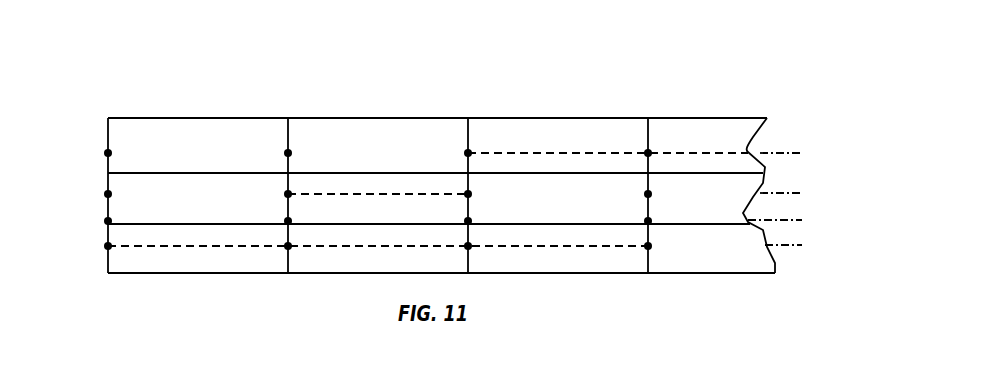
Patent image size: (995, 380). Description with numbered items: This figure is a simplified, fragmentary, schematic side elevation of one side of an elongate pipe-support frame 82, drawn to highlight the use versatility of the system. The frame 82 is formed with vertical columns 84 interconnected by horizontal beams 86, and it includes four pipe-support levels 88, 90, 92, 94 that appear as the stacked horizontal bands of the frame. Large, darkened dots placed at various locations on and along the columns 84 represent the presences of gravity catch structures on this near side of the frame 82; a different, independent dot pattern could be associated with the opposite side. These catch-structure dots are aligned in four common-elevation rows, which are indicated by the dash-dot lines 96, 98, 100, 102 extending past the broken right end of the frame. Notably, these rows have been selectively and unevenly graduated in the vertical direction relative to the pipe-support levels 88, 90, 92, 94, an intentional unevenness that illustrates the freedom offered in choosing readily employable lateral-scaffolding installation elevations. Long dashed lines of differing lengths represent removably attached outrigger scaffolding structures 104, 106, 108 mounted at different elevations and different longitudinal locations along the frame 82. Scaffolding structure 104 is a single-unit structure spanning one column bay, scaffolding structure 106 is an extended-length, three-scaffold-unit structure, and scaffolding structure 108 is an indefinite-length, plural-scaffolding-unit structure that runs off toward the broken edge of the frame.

The pipe-support frame 82 is at (561, 90).
The columns 84 is at (108, 131).
The beams 86 is at (172, 173).
The pipe-support level 88 is at (99, 114).
The pipe-support level 90 is at (99, 168).
The pipe-support level 92 is at (99, 220).
The pipe-support level 94 is at (99, 268).
The dash-dot line 96 is at (802, 153).
The dash-dot line 98 is at (802, 193).
The dash-dot line 100 is at (802, 220).
The dash-dot line 102 is at (802, 245).
The scaffolding structure 104 is at (370, 195).
The scaffolding structure 106 is at (343, 247).
The scaffolding structure 108 is at (540, 152).